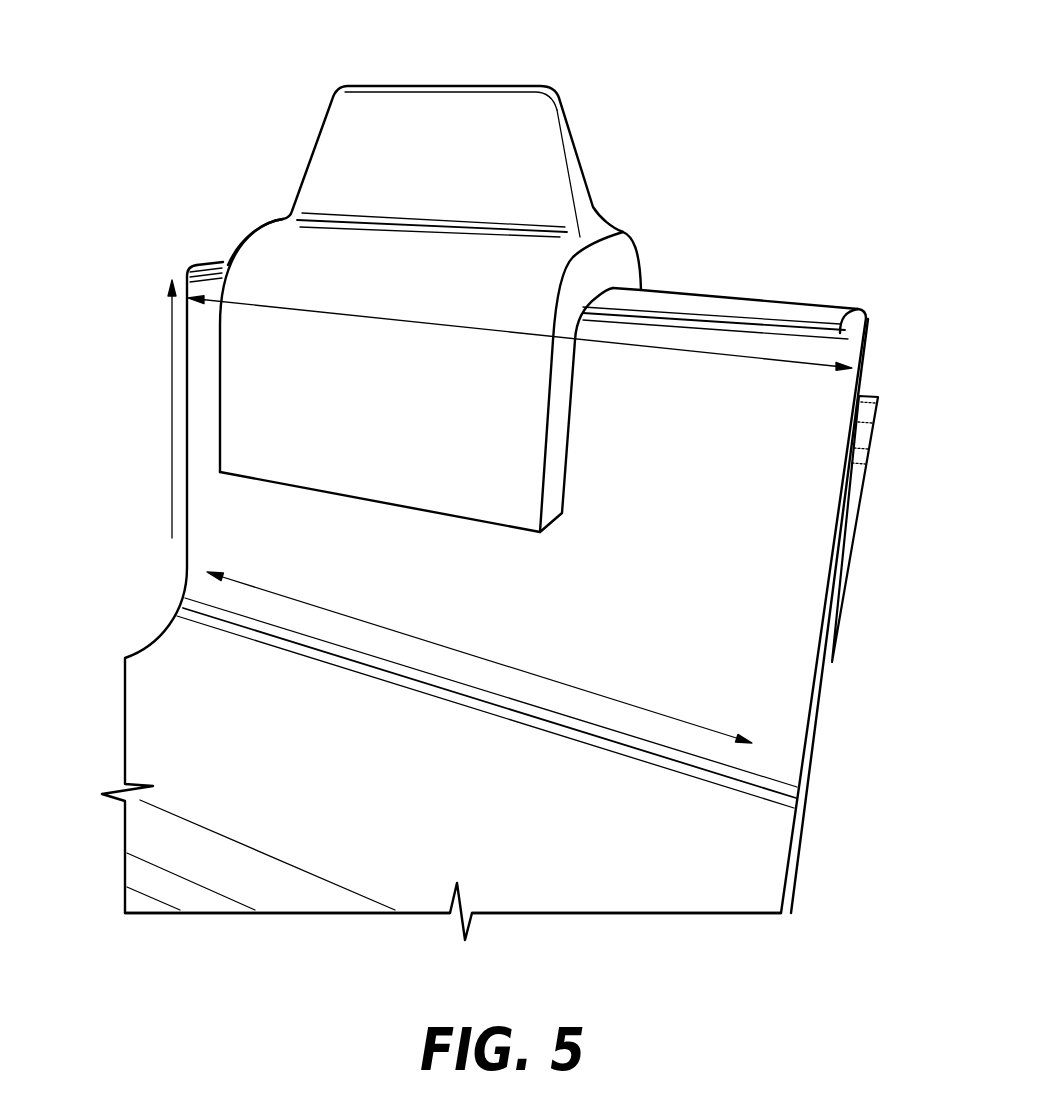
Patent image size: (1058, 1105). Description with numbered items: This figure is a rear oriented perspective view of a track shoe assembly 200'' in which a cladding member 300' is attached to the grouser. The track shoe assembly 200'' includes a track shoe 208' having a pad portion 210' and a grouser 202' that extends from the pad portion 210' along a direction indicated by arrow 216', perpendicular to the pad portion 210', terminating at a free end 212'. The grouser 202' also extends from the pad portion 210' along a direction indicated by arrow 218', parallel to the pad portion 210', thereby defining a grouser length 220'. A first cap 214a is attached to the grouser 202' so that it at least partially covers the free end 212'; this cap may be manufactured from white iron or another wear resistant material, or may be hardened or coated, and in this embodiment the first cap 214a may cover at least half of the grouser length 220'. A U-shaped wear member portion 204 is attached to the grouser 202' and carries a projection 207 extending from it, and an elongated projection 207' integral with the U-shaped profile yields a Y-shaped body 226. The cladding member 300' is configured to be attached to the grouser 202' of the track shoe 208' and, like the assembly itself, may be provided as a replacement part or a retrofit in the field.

The track shoe assembly 200'' is at (531, 242).
The grouser 202' is at (517, 602).
The U-shaped wear member portion 204 is at (487, 473).
The projection 207 is at (451, 74).
The elongated projection 207' is at (571, 164).
The track shoe 208' is at (516, 873).
The pad portion 210' is at (869, 616).
The free end 212' is at (881, 283).
The first cap 214a is at (270, 220).
The arrow indicating perpendicular direction 216' is at (114, 409).
The arrow indicating parallel direction 218' is at (479, 684).
The grouser length 220' is at (520, 352).
The Y-shaped body 226 is at (493, 404).
The cladding member 300' is at (430, 236).